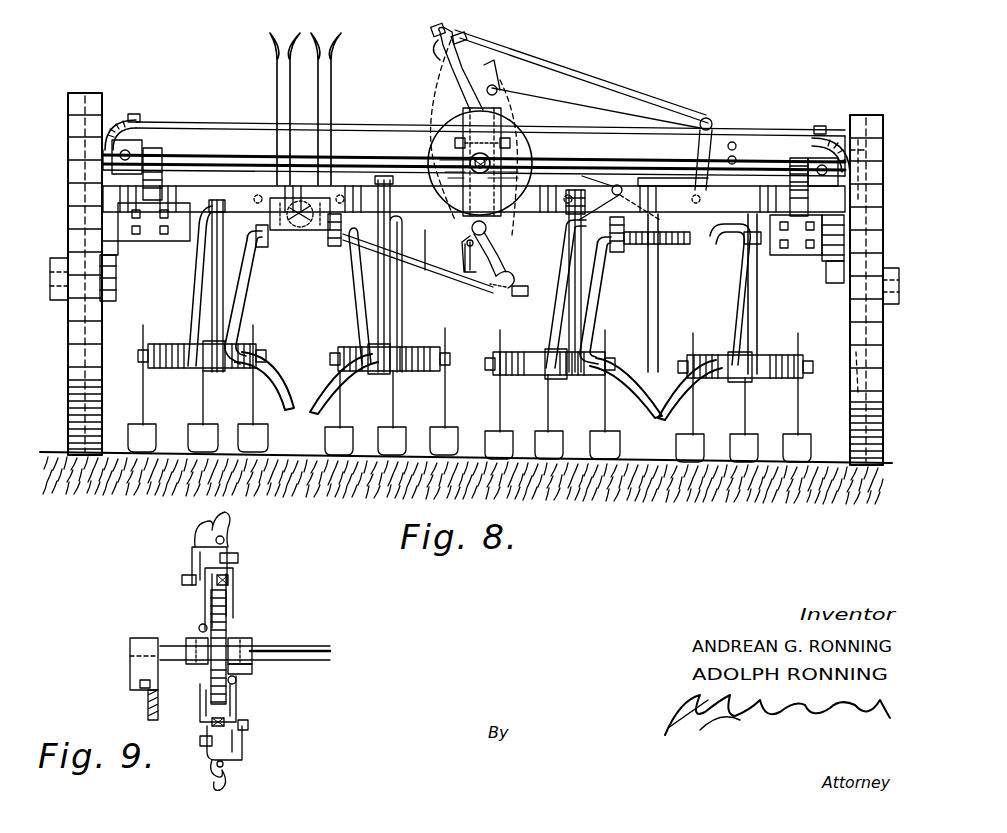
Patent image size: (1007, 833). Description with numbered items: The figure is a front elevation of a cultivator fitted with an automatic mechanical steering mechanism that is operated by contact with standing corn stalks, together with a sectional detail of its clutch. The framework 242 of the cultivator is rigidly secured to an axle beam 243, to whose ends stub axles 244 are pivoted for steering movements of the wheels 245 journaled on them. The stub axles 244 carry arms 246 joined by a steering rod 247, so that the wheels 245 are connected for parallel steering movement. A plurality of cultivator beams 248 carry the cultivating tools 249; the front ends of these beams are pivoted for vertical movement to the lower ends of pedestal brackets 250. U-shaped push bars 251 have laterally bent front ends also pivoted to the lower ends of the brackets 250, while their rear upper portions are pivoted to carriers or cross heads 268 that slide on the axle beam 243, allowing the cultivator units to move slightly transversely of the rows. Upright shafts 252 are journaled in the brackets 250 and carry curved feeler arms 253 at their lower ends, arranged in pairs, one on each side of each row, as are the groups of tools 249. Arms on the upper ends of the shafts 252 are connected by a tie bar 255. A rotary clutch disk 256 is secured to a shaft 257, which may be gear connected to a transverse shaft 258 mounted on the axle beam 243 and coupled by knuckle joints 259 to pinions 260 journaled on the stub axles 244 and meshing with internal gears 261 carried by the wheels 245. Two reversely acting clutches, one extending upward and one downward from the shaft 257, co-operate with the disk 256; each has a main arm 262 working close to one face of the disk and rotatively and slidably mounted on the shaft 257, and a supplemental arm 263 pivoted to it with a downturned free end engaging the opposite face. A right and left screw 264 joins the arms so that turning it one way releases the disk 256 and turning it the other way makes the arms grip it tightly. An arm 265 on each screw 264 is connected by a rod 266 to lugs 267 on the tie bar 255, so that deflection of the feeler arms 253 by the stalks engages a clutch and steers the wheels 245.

In FIG. 9, the framework 242 is at (145, 708).
In FIG. 8, the axle beam 243 is at (432, 272).
In FIG. 8, the stub axles 244 is at (116, 278).
In FIG. 8, the wheels 245 is at (100, 98).
In FIG. 8, the arms 246 is at (148, 130).
In FIG. 8, the steering rod 247 is at (350, 126).
In FIG. 8, the cultivator beams 248 is at (258, 354).
In FIG. 8, the cultivating tools 249 is at (198, 435).
In FIG. 8, the pedestal brackets 250 is at (403, 302).
In FIG. 8, the U-shaped push bars 251 is at (262, 272).
In FIG. 8, the upright shafts 252 is at (210, 254).
In FIG. 8, the feeler arms 253 is at (278, 400).
In FIG. 8, the tie bar 255 is at (620, 184).
In FIG. 8, the clutch disk 256 is at (525, 162).
In FIG. 9, the clutch disk 256 is at (228, 632).
In FIG. 8, the shaft 257 is at (468, 160).
In FIG. 9, the shaft 257 is at (330, 653).
In FIG. 8, the transverse shaft 258 is at (192, 166).
In FIG. 8, the knuckle joints 259 is at (130, 140).
In FIG. 8, the pinions 260 is at (854, 105).
In FIG. 8, the internal gears 261 is at (852, 355).
In FIG. 8, the main arm 262 is at (478, 128).
In FIG. 9, the main arm 262 is at (204, 640).
In FIG. 8, the supplemental arm 263 is at (500, 138).
In FIG. 9, the supplemental arm 263 is at (236, 596).
In FIG. 9, the right and left screw 264 is at (234, 576).
In FIG. 8, the arm 265 is at (448, 75).
In FIG. 9, the arm 265 is at (192, 556).
In FIG. 8, the rods 266 is at (500, 290).
In FIG. 9, the rods 266 is at (212, 766).
In FIG. 8, the lugs 267 is at (716, 126).
In FIG. 8, the cross heads 268 is at (275, 198).